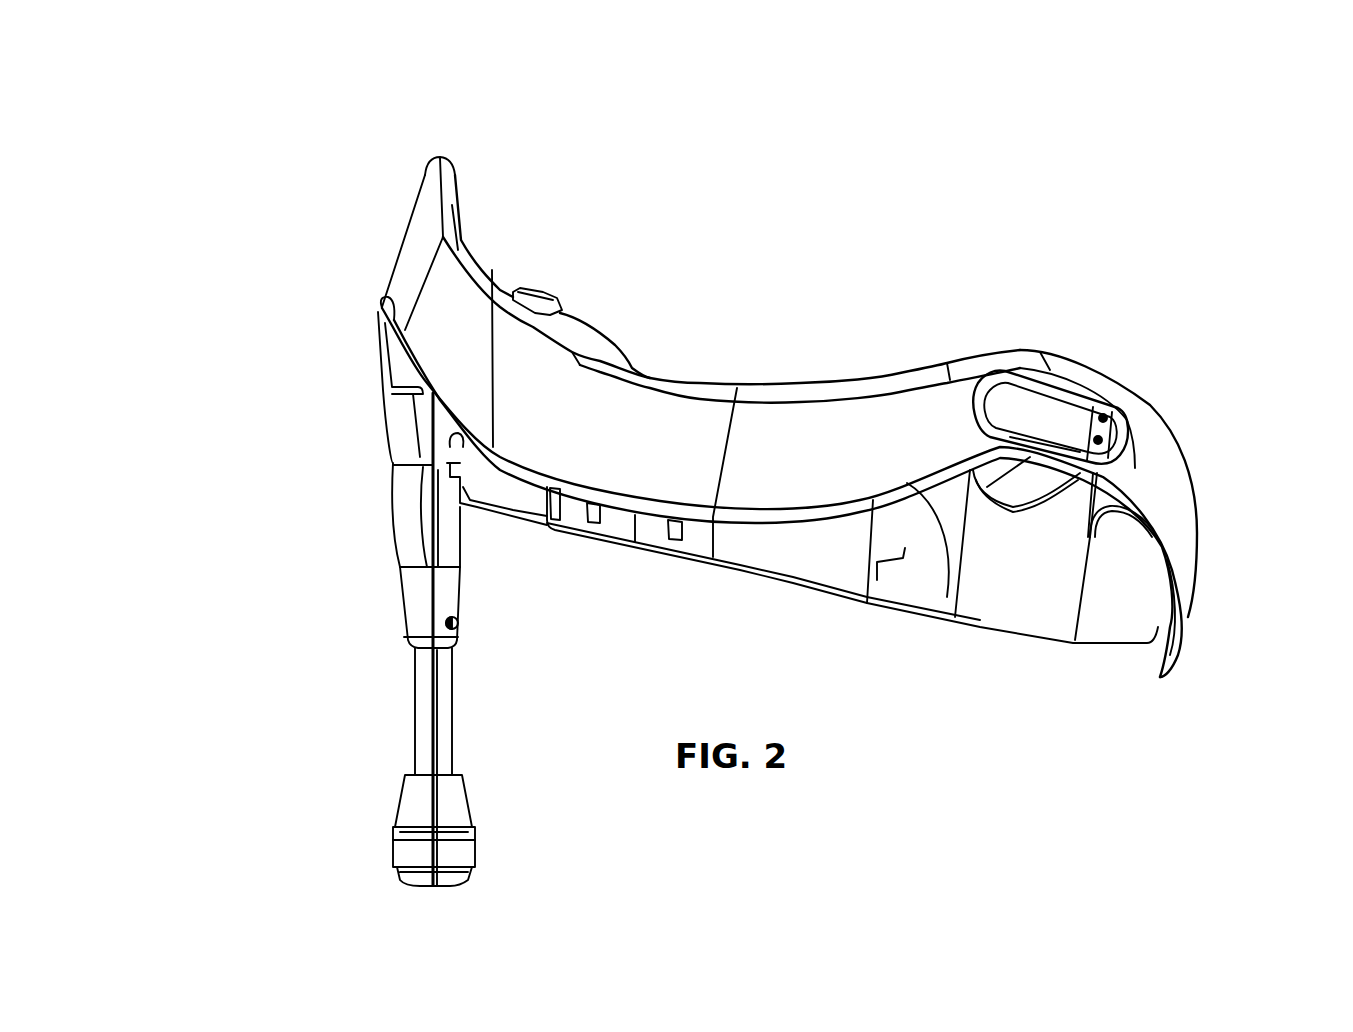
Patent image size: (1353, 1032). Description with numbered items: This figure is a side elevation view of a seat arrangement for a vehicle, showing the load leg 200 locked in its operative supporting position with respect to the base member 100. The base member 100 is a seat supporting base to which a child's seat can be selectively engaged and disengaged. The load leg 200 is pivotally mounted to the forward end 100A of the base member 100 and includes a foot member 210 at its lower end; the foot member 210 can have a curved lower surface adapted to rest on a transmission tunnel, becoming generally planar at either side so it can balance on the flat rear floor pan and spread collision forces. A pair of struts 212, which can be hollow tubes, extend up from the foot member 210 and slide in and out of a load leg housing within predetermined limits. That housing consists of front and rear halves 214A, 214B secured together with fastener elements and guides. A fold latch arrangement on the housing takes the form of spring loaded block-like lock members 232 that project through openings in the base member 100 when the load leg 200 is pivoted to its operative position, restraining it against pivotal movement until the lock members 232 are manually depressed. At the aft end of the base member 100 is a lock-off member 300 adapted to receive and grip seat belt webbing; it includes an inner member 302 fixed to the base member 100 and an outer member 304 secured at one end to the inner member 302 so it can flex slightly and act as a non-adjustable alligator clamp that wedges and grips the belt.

The base member 100 is at (728, 340).
The forward end 100A is at (443, 157).
The lock member 232 is at (539, 290).
The lock-off member 300 is at (1104, 431).
The inner member 302 is at (963, 420).
The outer member 304 is at (1033, 407).
The load leg 200 is at (381, 654).
The front half of load leg housing 214A is at (393, 538).
The rear half of load leg housing 214B is at (467, 553).
The strut 212 is at (413, 710).
The foot member 210 is at (393, 867).